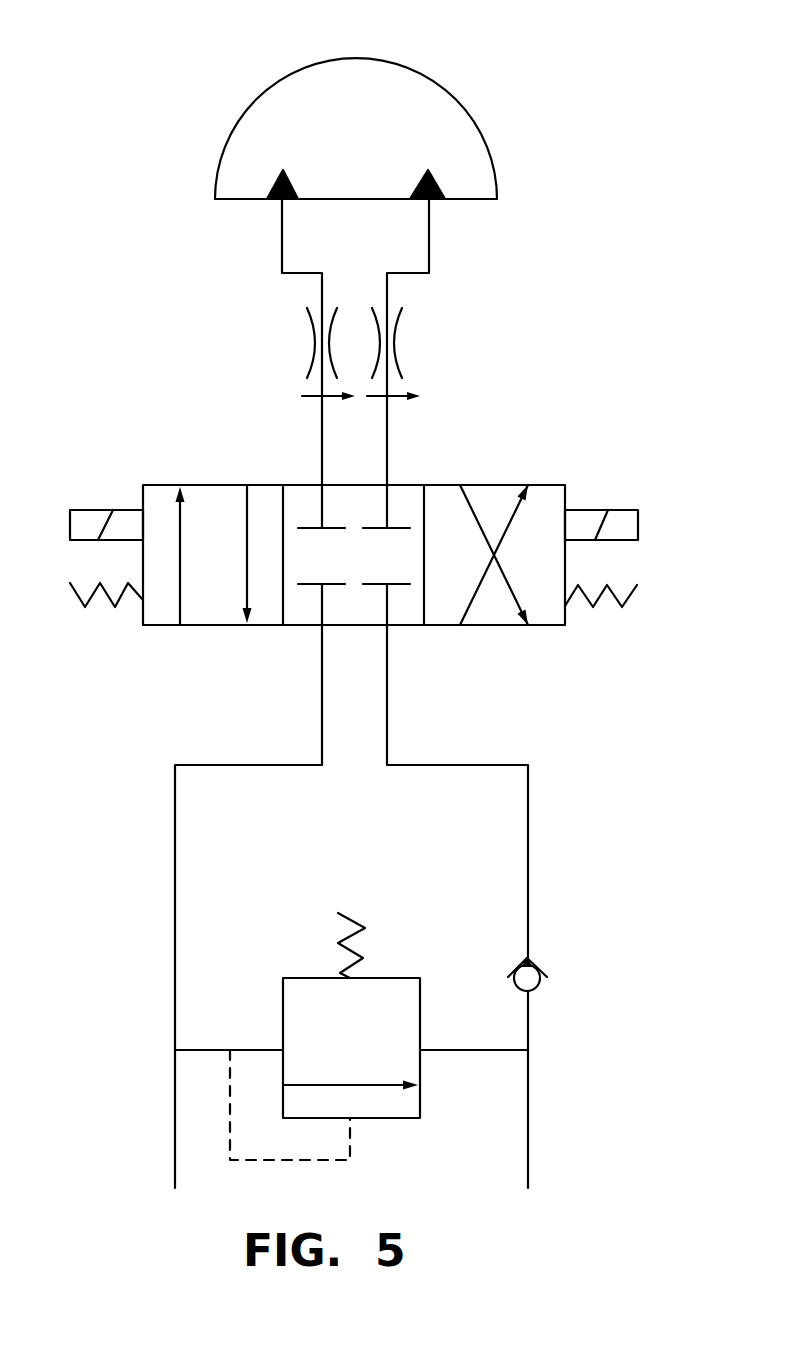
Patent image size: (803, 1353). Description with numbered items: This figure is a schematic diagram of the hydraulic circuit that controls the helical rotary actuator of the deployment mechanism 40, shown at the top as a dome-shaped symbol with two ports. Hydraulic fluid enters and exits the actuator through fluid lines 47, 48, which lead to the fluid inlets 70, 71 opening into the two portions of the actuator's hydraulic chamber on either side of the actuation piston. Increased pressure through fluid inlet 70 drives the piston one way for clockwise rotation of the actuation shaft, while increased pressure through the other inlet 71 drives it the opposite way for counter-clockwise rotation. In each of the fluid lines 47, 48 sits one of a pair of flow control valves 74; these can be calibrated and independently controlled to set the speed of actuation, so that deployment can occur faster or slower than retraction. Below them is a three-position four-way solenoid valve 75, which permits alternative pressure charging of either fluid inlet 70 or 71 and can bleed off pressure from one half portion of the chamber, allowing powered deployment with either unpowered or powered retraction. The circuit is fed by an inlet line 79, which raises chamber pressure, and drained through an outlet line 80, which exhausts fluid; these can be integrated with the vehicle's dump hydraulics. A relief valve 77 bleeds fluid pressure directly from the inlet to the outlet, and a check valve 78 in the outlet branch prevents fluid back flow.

The deployment mechanism 40 is at (245, 83).
The fluid inlet 70 is at (275, 175).
The fluid inlet 71 is at (435, 173).
The fluid line 47 is at (282, 238).
The fluid line 48 is at (429, 248).
The flow control valve 74 is at (313, 340).
The three-position four-way solenoid valve 75 is at (565, 497).
The relief valve 77 is at (293, 947).
The check valve 78 is at (537, 962).
The inlet line 79 is at (173, 1150).
The outlet line 80 is at (528, 1152).